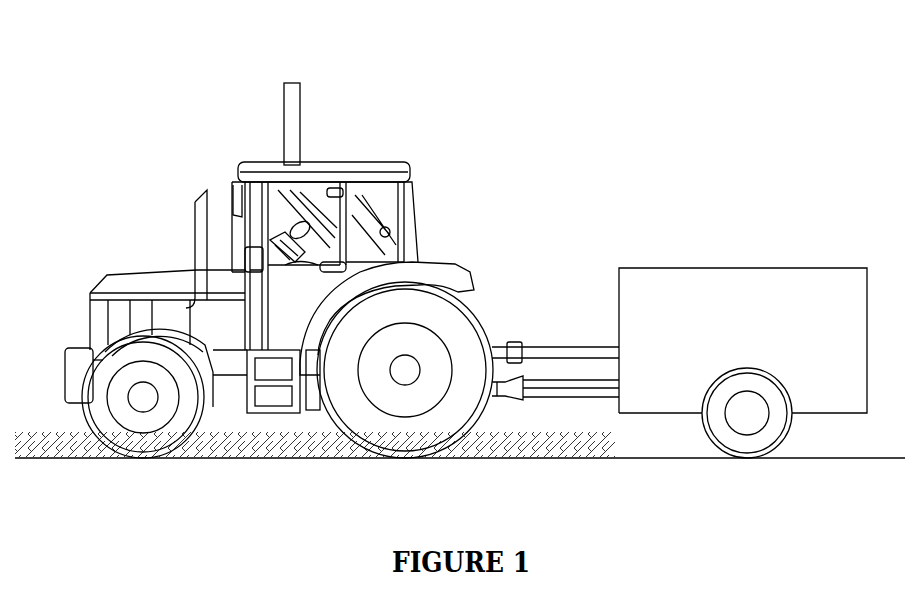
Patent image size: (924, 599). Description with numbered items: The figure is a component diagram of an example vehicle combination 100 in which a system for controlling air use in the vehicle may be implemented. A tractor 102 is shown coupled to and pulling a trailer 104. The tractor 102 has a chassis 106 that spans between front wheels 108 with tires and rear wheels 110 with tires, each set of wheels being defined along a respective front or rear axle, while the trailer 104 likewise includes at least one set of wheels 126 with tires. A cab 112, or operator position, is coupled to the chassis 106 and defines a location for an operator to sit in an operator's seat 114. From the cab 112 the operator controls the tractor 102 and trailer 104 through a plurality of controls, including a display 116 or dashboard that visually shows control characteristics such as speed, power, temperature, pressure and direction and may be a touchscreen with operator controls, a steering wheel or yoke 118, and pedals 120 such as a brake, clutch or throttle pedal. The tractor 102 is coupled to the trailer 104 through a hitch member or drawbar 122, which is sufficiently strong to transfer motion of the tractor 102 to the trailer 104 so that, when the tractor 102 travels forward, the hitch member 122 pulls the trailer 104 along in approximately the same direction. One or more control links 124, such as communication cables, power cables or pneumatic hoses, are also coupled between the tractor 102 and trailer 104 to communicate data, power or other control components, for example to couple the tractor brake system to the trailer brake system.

The vehicle combination 100 is at (87, 63).
The tractor 102 is at (250, 153).
The trailer 104 is at (716, 268).
The chassis 106 is at (238, 395).
The front wheels 108 is at (143, 458).
The rear wheels 110 is at (407, 458).
The cab 112 is at (312, 181).
The operator's seat 114 is at (404, 232).
The display 116 is at (250, 250).
The steering wheel 118 is at (300, 234).
The pedals 120 is at (326, 338).
The hitch member 122 is at (524, 397).
The control links 124 is at (500, 344).
The wheels 126 is at (749, 458).